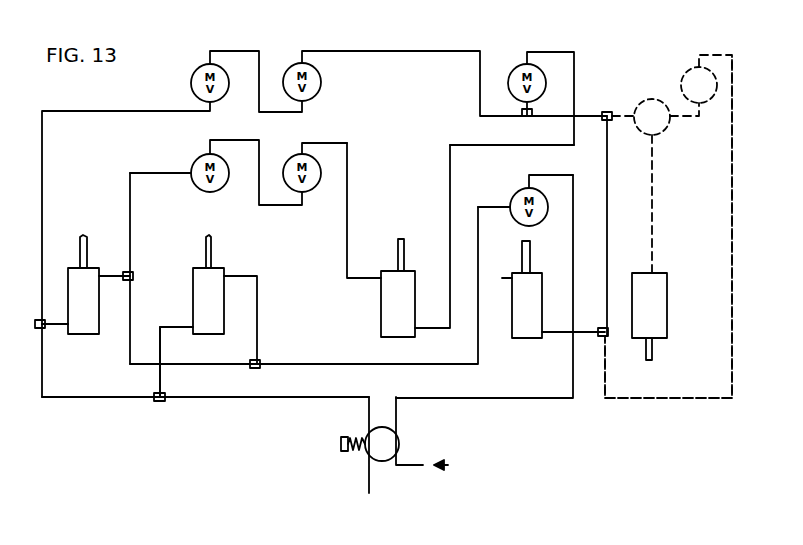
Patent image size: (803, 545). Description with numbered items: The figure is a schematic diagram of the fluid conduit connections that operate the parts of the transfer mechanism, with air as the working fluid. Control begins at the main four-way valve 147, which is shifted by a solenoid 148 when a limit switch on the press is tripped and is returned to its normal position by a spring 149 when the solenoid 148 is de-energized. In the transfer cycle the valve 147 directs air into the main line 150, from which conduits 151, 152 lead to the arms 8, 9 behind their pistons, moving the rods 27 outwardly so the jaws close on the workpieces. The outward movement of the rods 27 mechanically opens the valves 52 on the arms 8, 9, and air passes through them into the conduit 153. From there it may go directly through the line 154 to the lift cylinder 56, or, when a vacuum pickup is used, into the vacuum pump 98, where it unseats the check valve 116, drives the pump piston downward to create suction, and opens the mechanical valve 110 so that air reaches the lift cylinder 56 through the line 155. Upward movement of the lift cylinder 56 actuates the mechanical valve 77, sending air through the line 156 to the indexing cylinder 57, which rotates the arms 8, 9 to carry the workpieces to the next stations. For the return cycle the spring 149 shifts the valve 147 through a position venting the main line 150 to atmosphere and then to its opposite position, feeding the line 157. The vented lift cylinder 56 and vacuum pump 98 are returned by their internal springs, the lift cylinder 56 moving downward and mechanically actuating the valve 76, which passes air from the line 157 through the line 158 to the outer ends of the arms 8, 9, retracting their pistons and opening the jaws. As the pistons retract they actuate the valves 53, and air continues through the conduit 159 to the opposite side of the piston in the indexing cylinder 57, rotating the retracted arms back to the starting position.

The arm 8 is at (193, 303).
The arm 9 is at (68, 293).
The rod 27 is at (85, 250).
The valve 52 is at (203, 67).
The valve 53 is at (196, 161).
The lift cylinder 56 is at (536, 311).
The indexing cylinder 57 is at (381, 311).
The valve 76 is at (518, 191).
The valve 77 is at (517, 65).
The vacuum pump 98 is at (667, 316).
The mechanical valve 110 is at (690, 71).
The check valve 116 is at (642, 101).
The main four-way valve 147 is at (365, 452).
The solenoid 148 is at (340, 447).
The spring 149 is at (356, 437).
The main line 150 is at (215, 398).
The conduit 151 is at (162, 352).
The conduit 152 is at (55, 327).
The conduit 153 is at (400, 51).
The line 154 is at (607, 203).
The line 155 is at (733, 188).
The line 156 is at (448, 158).
The line 157 is at (482, 398).
The line 158 is at (313, 360).
The conduit 159 is at (349, 214).